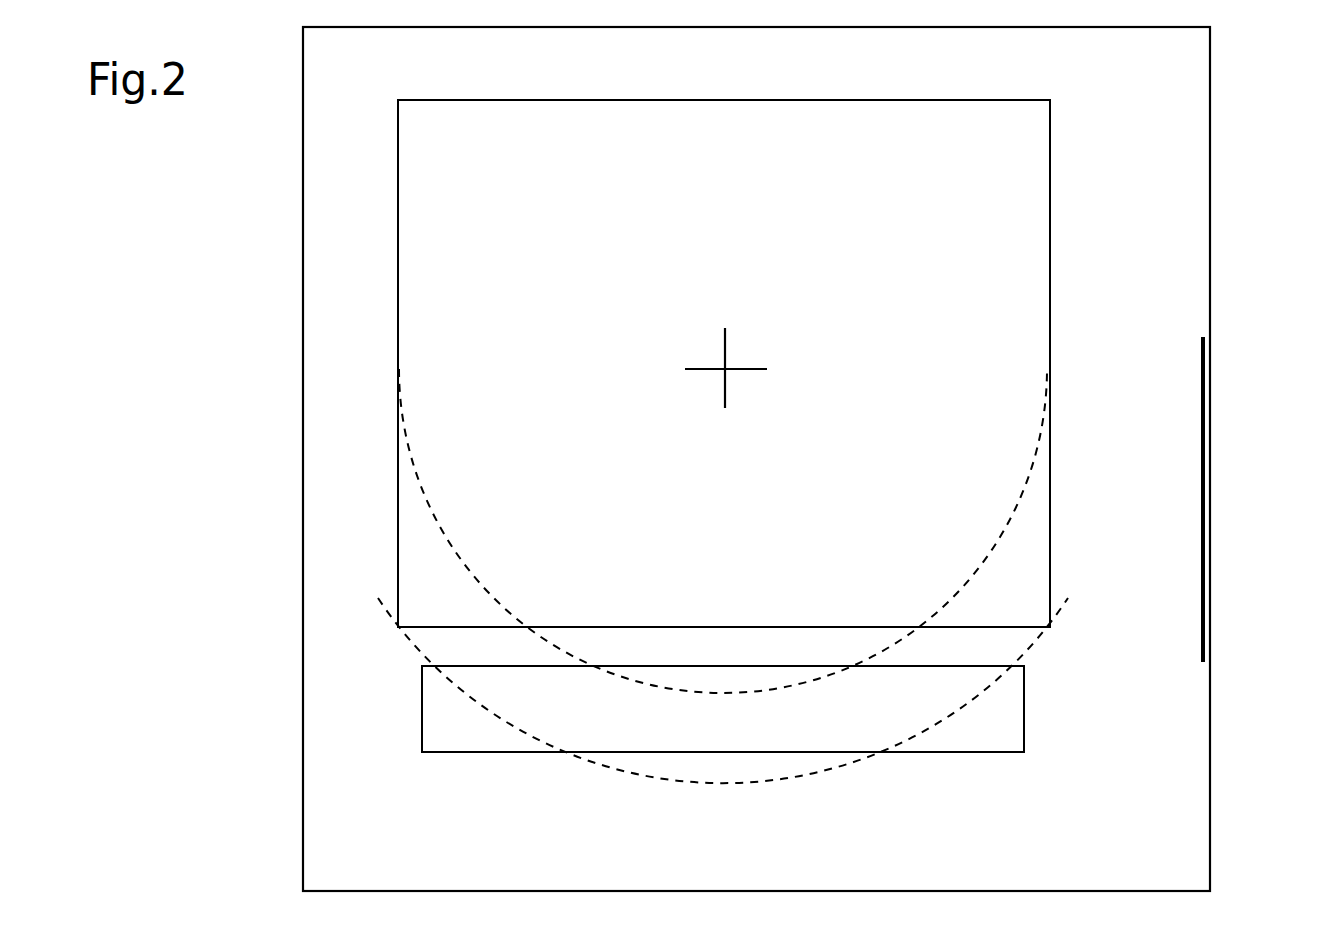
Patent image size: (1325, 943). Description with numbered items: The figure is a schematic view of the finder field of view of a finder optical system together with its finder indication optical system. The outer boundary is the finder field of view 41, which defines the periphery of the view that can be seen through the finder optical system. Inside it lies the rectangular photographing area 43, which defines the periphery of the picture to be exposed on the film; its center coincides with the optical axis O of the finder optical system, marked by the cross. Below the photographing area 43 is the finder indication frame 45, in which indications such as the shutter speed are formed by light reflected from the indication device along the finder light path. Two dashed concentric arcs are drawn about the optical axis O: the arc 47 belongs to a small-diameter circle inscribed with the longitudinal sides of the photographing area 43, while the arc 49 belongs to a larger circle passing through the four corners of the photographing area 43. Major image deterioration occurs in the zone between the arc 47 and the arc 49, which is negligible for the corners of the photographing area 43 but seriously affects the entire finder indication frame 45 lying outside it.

The finder field of view 41 is at (1210, 676).
The photographing area 43 is at (398, 533).
The finder indication frame 45 is at (455, 730).
The arc 47 is at (740, 692).
The arc 49 is at (863, 758).
The optical axis O is at (725, 367).